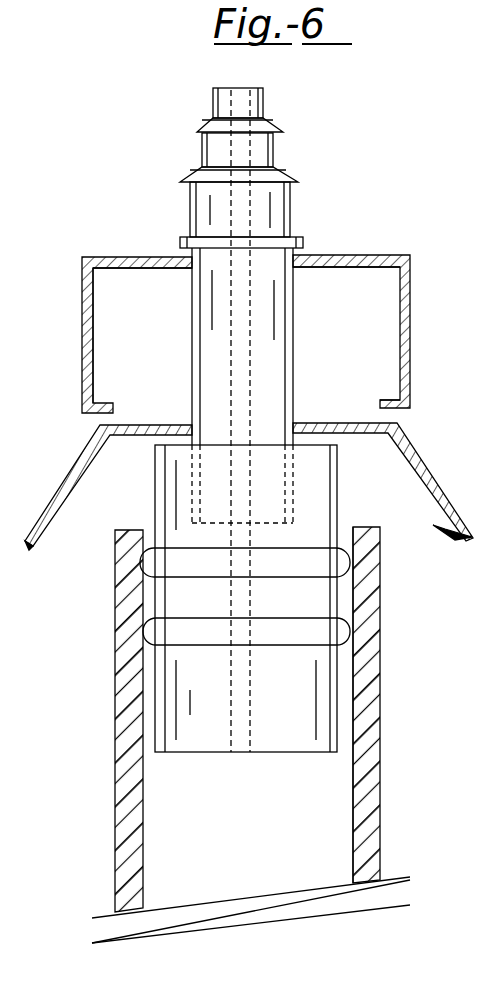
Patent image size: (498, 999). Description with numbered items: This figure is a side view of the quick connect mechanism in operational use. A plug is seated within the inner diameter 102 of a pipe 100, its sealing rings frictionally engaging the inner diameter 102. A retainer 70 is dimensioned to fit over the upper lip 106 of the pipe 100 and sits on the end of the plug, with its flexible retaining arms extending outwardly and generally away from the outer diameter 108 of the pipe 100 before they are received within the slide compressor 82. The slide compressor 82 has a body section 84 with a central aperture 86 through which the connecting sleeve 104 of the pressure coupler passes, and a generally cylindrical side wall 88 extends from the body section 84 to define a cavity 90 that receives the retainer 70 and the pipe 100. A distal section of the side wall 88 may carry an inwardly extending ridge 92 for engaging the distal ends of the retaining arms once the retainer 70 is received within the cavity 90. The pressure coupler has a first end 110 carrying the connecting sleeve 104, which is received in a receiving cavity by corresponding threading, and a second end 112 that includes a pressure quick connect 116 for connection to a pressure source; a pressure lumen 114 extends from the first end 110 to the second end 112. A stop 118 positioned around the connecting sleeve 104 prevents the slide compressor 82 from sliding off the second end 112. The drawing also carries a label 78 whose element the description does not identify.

The retainer 70 is at (58, 493).
The flange edge / base 78 is at (50, 530).
The slide compressor 82 is at (413, 345).
The body section 84 is at (395, 258).
The central aperture 86 is at (188, 268).
The cylindrical side wall 88 is at (82, 352).
The cavity 90 is at (155, 357).
The ridge 92 is at (388, 398).
The pipe 100 is at (398, 728).
The inner diameter 102 is at (357, 838).
The connecting sleeve 104 is at (294, 347).
The upper lip 106 is at (135, 530).
The outer diameter 108 is at (383, 775).
The first end 110 is at (258, 88).
The second end 112 is at (337, 498).
The pressure lumen 114 is at (288, 198).
The pressure quick connect 116 is at (262, 104).
The stop 118 is at (303, 240).